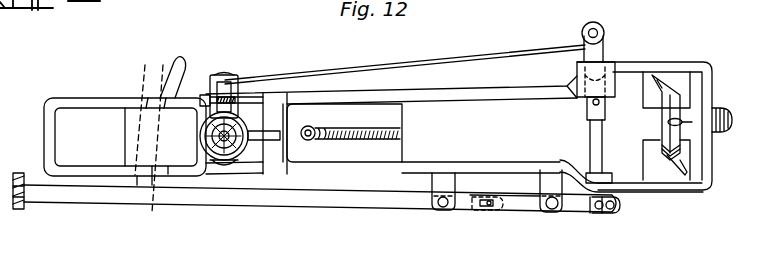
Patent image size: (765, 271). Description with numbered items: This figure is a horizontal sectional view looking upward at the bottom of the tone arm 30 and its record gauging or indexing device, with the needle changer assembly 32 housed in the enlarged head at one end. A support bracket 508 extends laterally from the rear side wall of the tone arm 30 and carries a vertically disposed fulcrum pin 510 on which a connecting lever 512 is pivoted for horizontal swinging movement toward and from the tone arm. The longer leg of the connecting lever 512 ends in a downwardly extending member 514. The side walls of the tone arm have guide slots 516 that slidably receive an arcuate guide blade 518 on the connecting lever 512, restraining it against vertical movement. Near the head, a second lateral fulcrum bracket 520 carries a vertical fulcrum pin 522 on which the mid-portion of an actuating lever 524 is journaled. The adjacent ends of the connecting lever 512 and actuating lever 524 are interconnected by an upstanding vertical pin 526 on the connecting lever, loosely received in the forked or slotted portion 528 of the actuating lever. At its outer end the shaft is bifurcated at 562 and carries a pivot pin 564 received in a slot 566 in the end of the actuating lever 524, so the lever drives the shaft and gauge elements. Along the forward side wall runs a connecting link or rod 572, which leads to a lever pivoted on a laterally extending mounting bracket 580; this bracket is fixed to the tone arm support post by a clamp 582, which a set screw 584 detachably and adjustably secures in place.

The tone arm 30 is at (82, 107).
The needle changer assembly 32 is at (705, 60).
The support bracket 508 is at (440, 180).
The fulcrum pin 510 is at (438, 208).
The connecting lever 512 is at (340, 200).
The downwardly extending member 514 is at (18, 212).
The guide slots 516 is at (149, 142).
The arcuate guide blade 518 is at (177, 53).
The second lateral fulcrum bracket 520 is at (553, 172).
The vertical fulcrum pin 522 is at (558, 208).
The actuating lever 524 is at (518, 204).
The upstanding vertical pin 526 is at (487, 206).
The forked or slotted portion 528 is at (478, 196).
The bifurcated or slotted outer end of shaft 562 is at (600, 208).
The pivot pin 564 is at (616, 205).
The slot 566 is at (615, 212).
The connecting link or rod 572 is at (433, 62).
The mounting bracket 580 is at (207, 88).
The clamp 582 is at (248, 161).
The set screw 584 is at (237, 85).